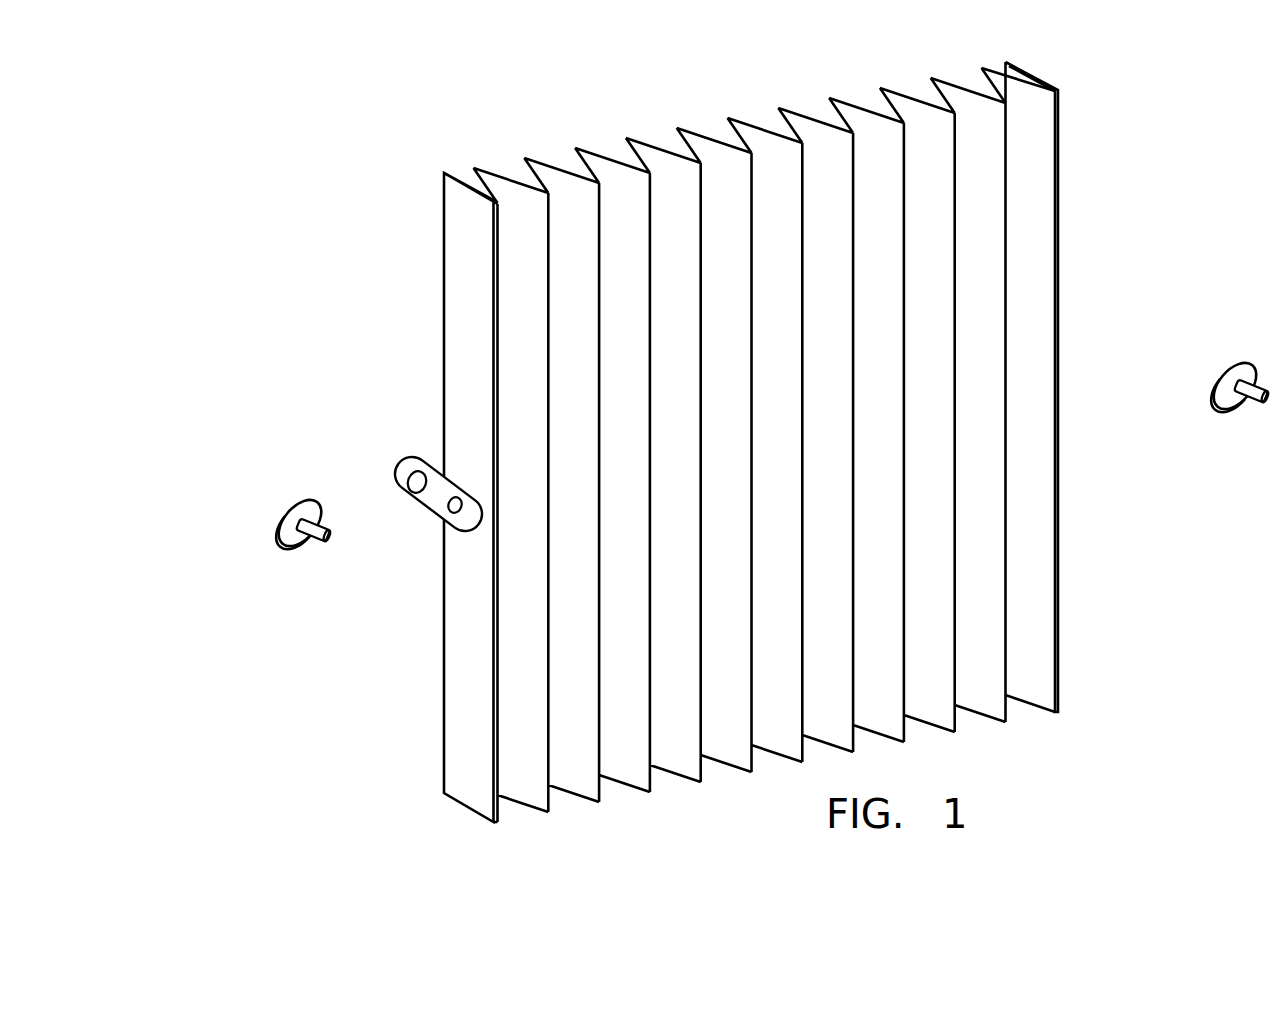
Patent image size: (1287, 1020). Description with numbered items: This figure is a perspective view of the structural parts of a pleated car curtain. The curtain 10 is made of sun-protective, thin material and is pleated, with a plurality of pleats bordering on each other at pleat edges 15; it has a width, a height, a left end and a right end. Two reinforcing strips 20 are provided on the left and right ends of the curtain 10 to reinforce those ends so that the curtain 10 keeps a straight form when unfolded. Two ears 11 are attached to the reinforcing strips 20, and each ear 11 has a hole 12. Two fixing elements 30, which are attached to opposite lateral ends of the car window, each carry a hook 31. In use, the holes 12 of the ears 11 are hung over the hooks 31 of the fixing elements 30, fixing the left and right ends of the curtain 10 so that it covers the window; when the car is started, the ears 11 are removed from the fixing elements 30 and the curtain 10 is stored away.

The curtain 10 is at (796, 445).
The ear 11 is at (423, 470).
The hole 12 is at (447, 512).
The pleat edge 15 is at (600, 273).
The reinforcing strip 20 is at (452, 662).
The fixing element 30 is at (280, 520).
The hook 31 is at (323, 527).